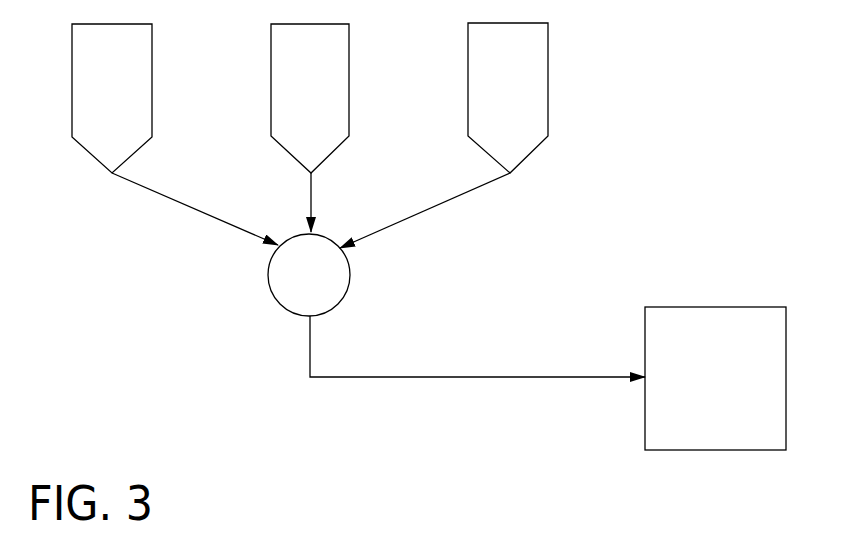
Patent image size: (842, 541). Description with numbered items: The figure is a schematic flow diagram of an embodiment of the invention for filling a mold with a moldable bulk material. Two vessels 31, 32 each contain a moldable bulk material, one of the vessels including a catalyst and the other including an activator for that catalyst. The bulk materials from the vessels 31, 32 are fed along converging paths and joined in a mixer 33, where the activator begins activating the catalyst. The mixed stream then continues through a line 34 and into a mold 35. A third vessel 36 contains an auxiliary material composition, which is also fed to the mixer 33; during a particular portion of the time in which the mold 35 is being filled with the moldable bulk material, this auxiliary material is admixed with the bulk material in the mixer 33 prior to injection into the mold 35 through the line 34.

The vessel 31 is at (152, 70).
The vessel 32 is at (349, 70).
The vessel 36 is at (548, 77).
The mixer 33 is at (350, 273).
The line 34 is at (310, 372).
The mold 35 is at (645, 330).